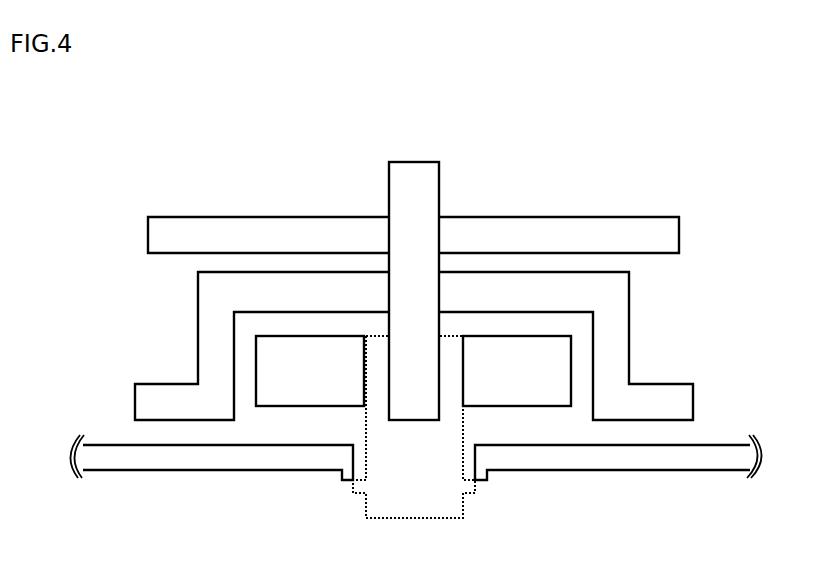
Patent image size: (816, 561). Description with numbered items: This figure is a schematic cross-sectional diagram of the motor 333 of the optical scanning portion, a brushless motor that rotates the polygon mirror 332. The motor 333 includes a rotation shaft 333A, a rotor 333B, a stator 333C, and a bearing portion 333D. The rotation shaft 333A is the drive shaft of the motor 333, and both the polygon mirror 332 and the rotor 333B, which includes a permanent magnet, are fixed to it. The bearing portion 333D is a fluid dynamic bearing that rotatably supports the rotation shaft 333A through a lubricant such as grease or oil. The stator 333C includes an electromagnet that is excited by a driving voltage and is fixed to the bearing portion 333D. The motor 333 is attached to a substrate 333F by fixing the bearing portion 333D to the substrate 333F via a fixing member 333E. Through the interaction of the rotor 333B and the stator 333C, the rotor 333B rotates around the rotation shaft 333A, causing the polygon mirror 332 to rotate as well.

The polygon mirror 332 is at (680, 230).
The motor 333 is at (607, 130).
The rotation shaft 333A is at (420, 160).
The rotor 333B is at (630, 312).
The stator 333C is at (322, 407).
The bearing portion 333D is at (465, 419).
The fixing member 333E is at (340, 472).
The substrate 333F is at (620, 470).